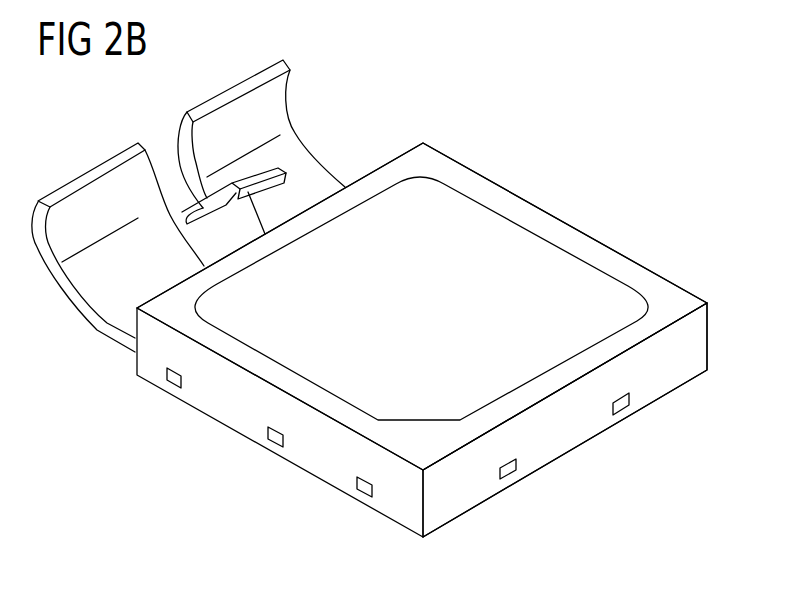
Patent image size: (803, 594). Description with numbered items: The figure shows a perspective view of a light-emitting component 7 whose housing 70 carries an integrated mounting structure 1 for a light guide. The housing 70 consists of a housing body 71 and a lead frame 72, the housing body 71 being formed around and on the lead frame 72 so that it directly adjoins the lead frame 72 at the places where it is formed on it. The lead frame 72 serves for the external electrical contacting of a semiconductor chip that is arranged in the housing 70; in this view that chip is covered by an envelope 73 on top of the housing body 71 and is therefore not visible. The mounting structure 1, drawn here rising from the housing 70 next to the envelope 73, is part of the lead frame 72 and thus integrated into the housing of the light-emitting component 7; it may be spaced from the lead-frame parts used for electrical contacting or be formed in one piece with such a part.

The mounting structure 1 is at (318, 118).
The light-emitting component 7 is at (550, 188).
The housing 70 is at (660, 297).
The housing body 71 is at (698, 342).
The lead frame 72 is at (512, 473).
The envelope 73 is at (578, 275).